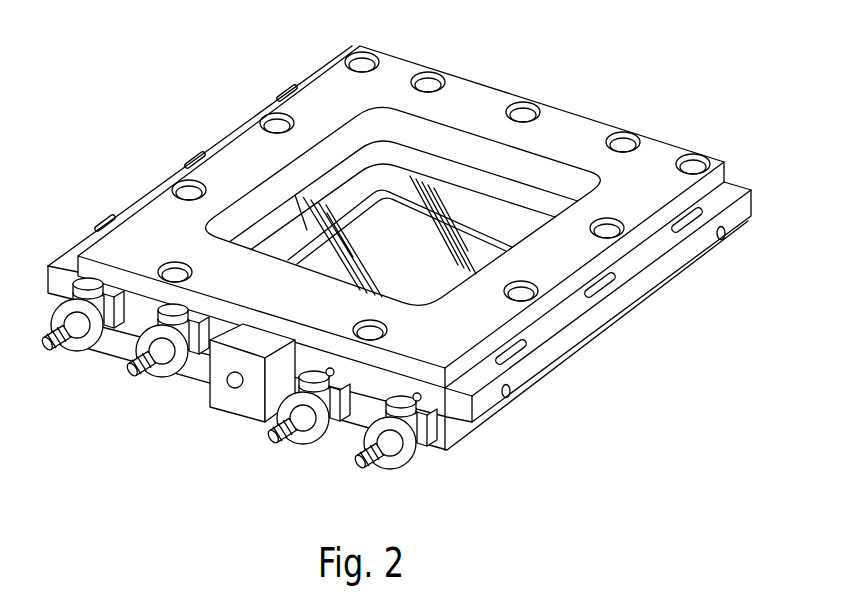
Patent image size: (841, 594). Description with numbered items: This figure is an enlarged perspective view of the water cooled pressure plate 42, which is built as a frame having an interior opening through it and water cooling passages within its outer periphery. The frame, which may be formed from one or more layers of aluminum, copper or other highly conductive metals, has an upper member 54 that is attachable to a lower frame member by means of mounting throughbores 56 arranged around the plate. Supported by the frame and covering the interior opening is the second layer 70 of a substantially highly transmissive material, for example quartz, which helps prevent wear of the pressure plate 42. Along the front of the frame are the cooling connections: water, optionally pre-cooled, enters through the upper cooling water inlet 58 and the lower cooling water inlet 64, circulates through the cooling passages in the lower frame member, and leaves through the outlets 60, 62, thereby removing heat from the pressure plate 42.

The water cooled pressure plate 42 is at (205, 122).
The upper member 54 is at (479, 105).
The mounting throughbores 56 is at (632, 136).
The upper cooling water inlet 58 is at (74, 352).
The outlet 60 is at (153, 374).
The outlet 62 is at (277, 442).
The lower cooling water inlet 64 is at (359, 467).
The second layer 70 is at (503, 249).